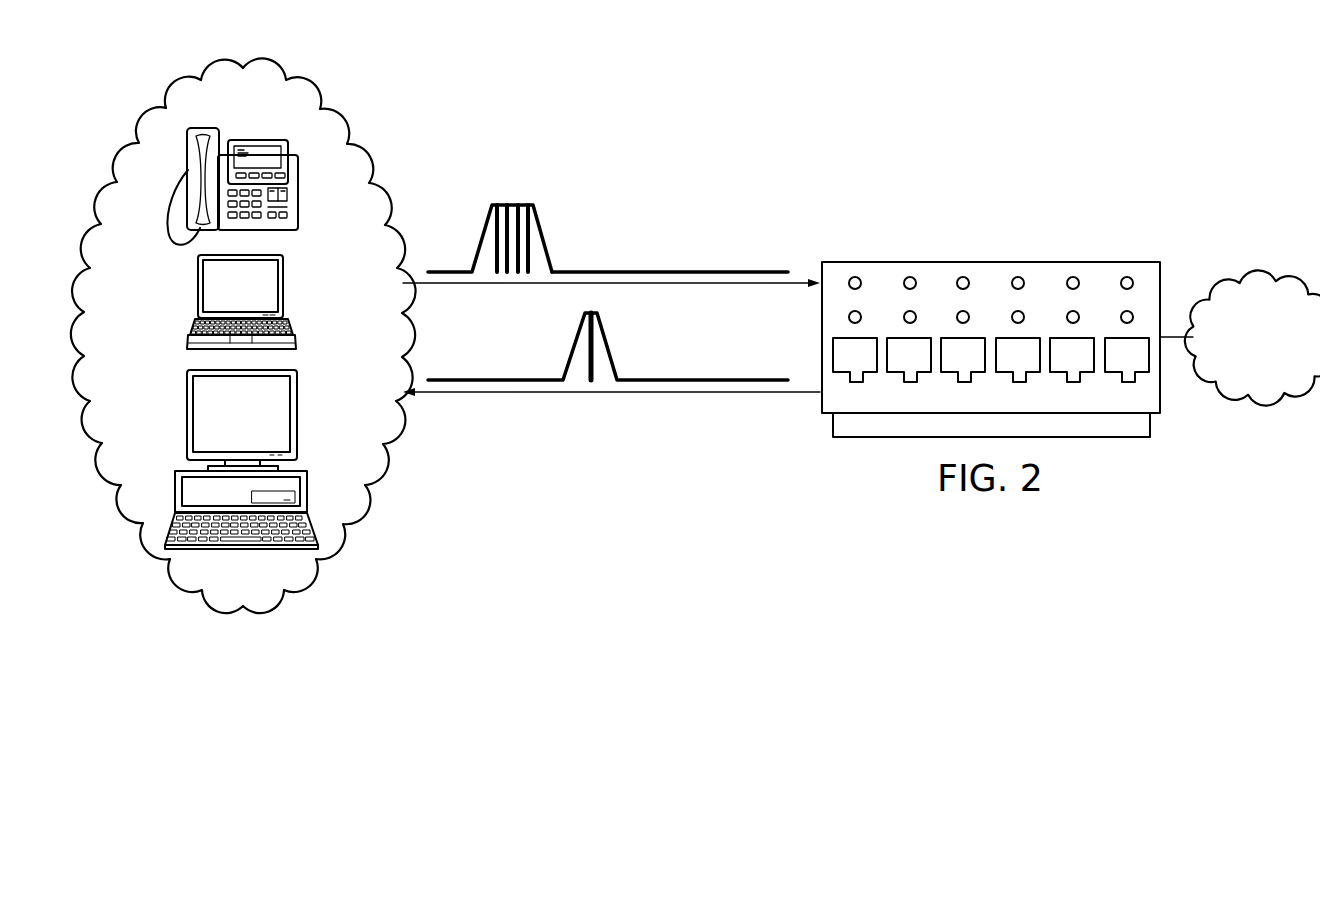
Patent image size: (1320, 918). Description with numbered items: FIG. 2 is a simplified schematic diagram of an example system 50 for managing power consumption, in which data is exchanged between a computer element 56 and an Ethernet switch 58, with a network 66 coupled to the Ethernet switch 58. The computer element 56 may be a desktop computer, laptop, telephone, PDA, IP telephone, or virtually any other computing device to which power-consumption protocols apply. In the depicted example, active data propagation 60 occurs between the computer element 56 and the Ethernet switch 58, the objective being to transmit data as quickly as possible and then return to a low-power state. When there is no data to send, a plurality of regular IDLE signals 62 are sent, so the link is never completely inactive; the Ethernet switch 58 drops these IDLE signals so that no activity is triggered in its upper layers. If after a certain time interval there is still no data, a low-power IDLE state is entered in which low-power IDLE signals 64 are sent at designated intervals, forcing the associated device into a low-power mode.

The system 50 is at (936, 112).
The computer element 56 is at (140, 86).
The Ethernet switch 58 is at (1043, 262).
The active data propagation 60 is at (513, 204).
The regular IDLE signals 62 is at (758, 268).
The low-power IDLE signals 64 is at (758, 377).
The network 66 is at (1283, 280).